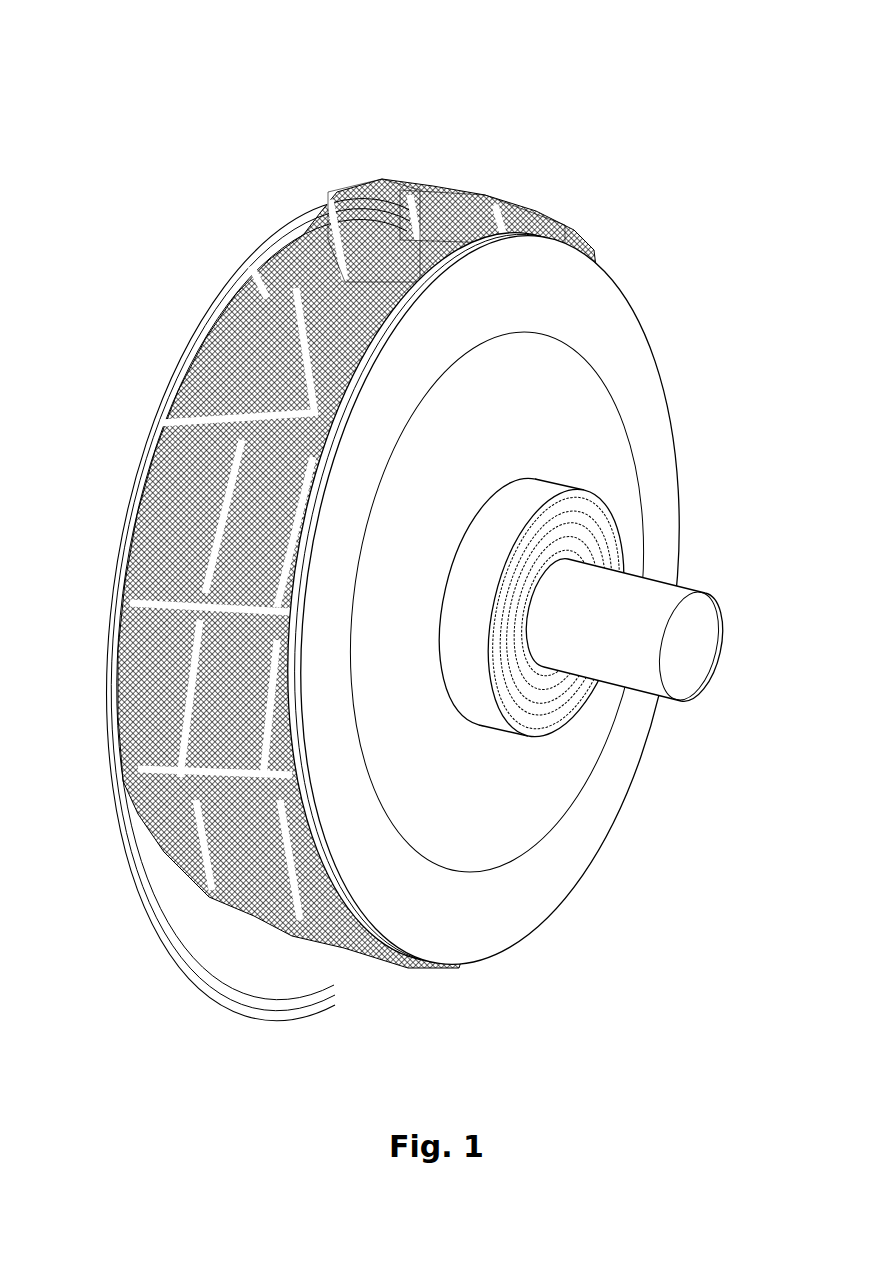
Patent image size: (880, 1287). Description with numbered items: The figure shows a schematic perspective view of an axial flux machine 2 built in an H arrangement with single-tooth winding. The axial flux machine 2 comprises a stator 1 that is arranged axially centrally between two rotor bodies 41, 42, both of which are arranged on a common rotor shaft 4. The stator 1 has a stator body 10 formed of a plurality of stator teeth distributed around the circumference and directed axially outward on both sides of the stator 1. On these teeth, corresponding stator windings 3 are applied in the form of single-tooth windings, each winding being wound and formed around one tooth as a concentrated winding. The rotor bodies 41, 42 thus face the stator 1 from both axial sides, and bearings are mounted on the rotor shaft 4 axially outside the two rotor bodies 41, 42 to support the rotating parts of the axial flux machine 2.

The stator 1 is at (398, 167).
The axial flux machine 2 is at (474, 114).
The stator windings 3 is at (152, 575).
The rotor shaft 4 is at (640, 596).
The stator body 10 is at (348, 272).
The rotor body 41 is at (265, 230).
The rotor body 42 is at (614, 251).